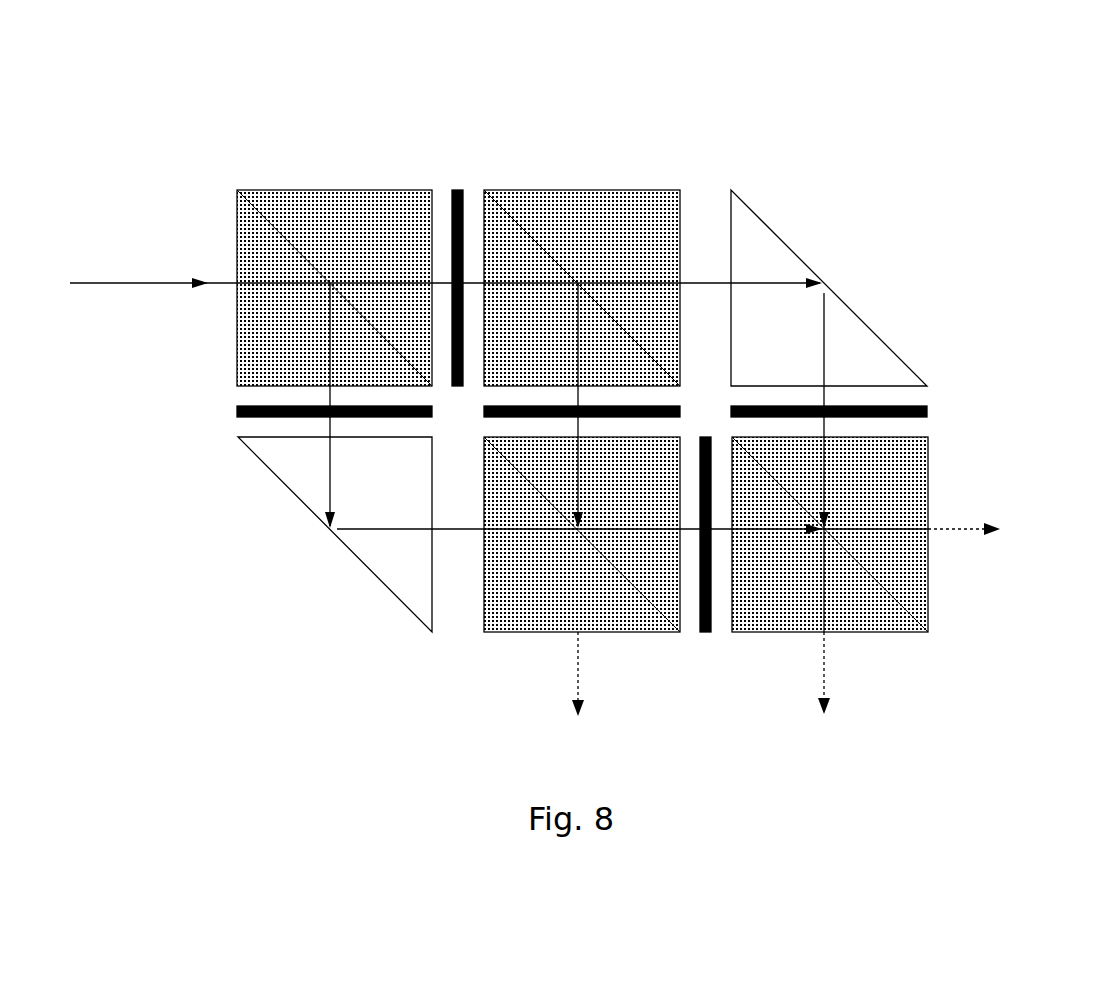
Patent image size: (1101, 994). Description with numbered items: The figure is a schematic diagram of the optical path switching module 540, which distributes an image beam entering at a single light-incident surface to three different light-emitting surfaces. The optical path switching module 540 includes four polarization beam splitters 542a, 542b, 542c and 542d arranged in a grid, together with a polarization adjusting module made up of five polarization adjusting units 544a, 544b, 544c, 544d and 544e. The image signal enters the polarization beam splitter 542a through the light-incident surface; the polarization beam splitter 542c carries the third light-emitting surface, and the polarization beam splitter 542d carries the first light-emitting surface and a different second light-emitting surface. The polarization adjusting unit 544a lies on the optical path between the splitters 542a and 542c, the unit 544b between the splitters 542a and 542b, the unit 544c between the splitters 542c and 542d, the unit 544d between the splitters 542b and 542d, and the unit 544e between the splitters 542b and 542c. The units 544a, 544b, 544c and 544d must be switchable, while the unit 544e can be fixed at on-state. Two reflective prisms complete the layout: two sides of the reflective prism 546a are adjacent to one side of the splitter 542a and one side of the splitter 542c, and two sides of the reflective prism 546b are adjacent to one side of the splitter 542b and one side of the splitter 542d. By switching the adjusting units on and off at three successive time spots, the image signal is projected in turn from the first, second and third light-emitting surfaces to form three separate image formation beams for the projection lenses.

The optical path switching module 540 is at (278, 128).
The polarization beam splitter 542a is at (334, 288).
The polarization beam splitter 542b is at (582, 288).
The polarization beam splitter 542c is at (582, 534).
The polarization beam splitter 542d is at (830, 534).
The polarization adjusting unit 544a is at (237, 410).
The polarization adjusting unit 544b is at (456, 190).
The polarization adjusting unit 544c is at (708, 632).
The polarization adjusting unit 544d is at (928, 408).
The polarization adjusting unit 544e is at (672, 410).
The reflective prism 546a is at (303, 505).
The reflective prism 546b is at (795, 250).